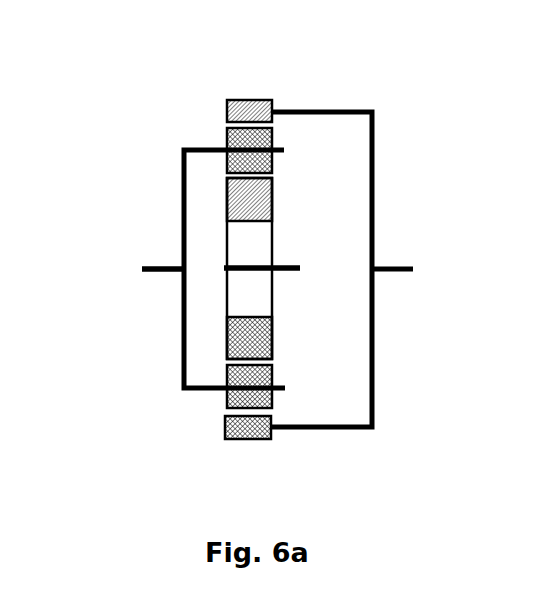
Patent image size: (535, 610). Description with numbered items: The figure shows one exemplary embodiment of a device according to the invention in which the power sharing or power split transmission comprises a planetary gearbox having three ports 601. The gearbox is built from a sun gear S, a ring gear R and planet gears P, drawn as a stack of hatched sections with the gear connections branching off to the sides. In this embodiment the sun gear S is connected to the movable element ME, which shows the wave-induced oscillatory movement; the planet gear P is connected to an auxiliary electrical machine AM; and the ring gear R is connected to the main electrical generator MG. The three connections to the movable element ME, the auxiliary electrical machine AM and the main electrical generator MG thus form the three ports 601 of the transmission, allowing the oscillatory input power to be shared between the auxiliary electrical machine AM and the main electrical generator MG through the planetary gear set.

The ports 601 is at (369, 341).
The ring gear R is at (249, 98).
The planet gear P is at (272, 268).
The sun gear S is at (266, 268).
The auxiliary electrical machine AM is at (142, 269).
The movable element ME is at (278, 268).
The main electrical generator MG is at (410, 269).